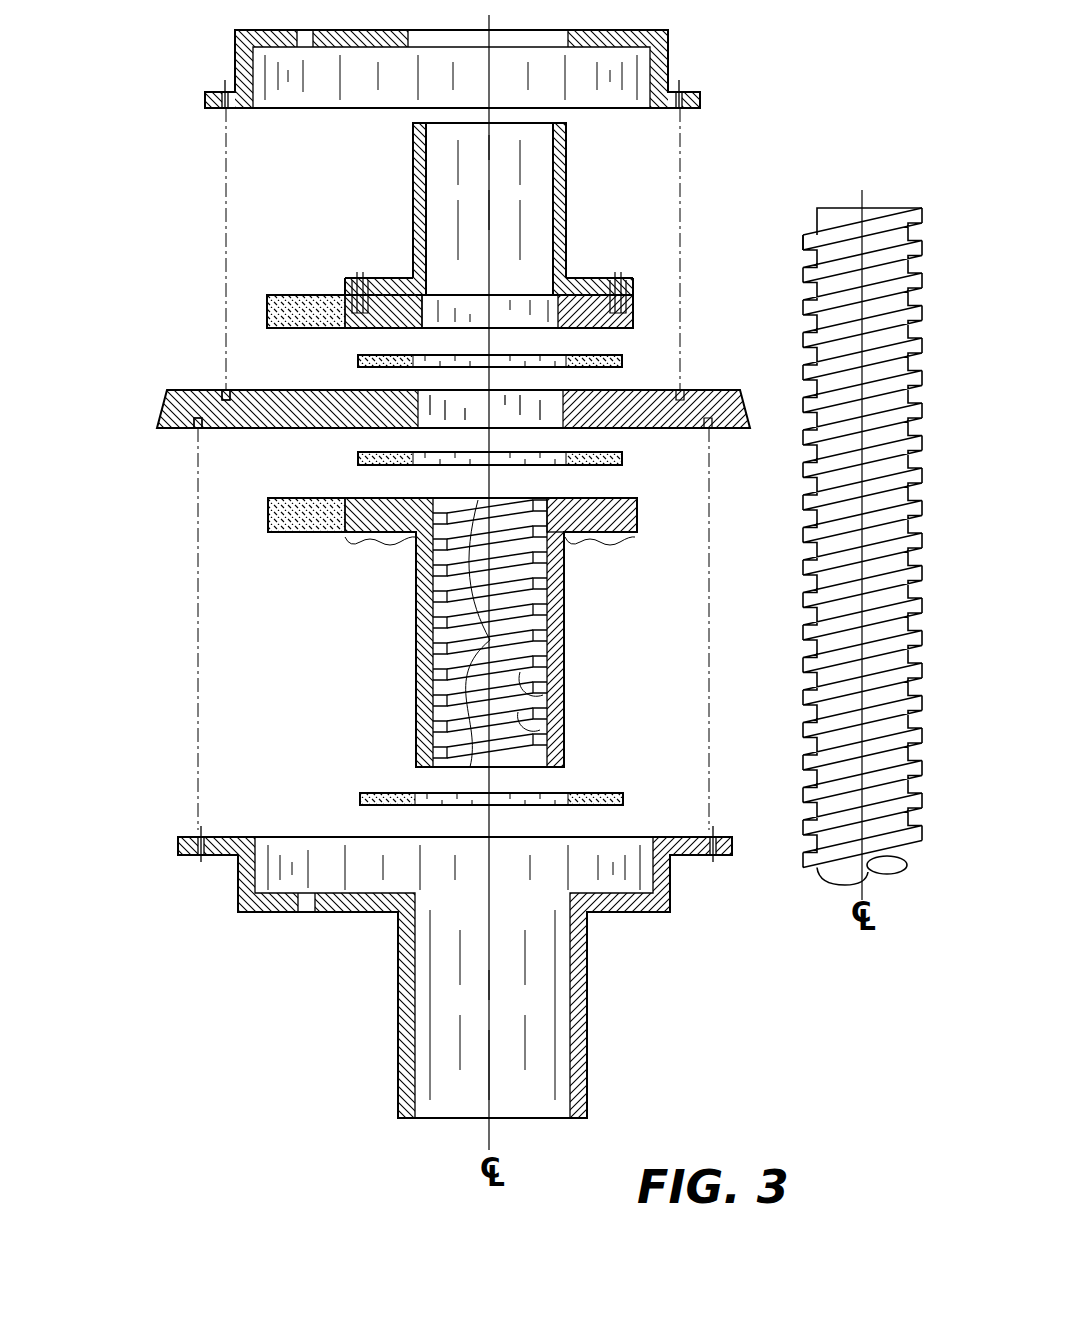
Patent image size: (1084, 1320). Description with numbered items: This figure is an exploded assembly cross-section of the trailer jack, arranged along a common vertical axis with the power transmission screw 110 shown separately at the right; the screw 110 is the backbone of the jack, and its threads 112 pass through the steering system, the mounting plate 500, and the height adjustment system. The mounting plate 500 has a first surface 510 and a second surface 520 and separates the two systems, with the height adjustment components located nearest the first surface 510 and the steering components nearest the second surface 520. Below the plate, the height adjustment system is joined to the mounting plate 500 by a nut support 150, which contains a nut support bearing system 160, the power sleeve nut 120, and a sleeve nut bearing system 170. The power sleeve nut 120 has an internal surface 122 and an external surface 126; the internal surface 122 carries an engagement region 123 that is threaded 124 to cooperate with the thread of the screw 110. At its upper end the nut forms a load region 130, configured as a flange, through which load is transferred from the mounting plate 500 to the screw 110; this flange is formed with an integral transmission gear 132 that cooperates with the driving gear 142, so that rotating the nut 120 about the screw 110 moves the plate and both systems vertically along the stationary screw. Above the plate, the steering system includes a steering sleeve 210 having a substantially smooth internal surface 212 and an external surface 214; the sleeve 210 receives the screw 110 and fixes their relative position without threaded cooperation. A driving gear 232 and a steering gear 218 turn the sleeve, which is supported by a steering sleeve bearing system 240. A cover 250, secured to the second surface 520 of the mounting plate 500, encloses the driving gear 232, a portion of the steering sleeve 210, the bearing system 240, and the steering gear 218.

The power transmission screw 110 is at (836, 208).
The power transmission screw threads 112 is at (803, 263).
The power sleeve nut 120 is at (451, 629).
The internal surface 122 is at (565, 668).
The engagement region 123 is at (565, 630).
The thread 124 is at (565, 735).
The external surface 126 is at (415, 652).
The load region 130 is at (598, 548).
The integral transmission gear 132 is at (637, 520).
The driving gear 142 is at (268, 525).
The nut support 150 is at (587, 988).
The nut support bearing system 160 is at (363, 793).
The sleeve nut bearing system 170 is at (358, 458).
The steering sleeve 210 is at (413, 170).
The internal surface 212 is at (560, 160).
The external surface 214 is at (413, 205).
The steering gear 218 is at (348, 329).
The driving gear 232 is at (267, 300).
The steering sleeve bearing system 240 is at (622, 362).
The cover 250 is at (235, 62).
The mounting plate 500 is at (167, 392).
The first surface 510 is at (176, 428).
The second surface 520 is at (224, 392).